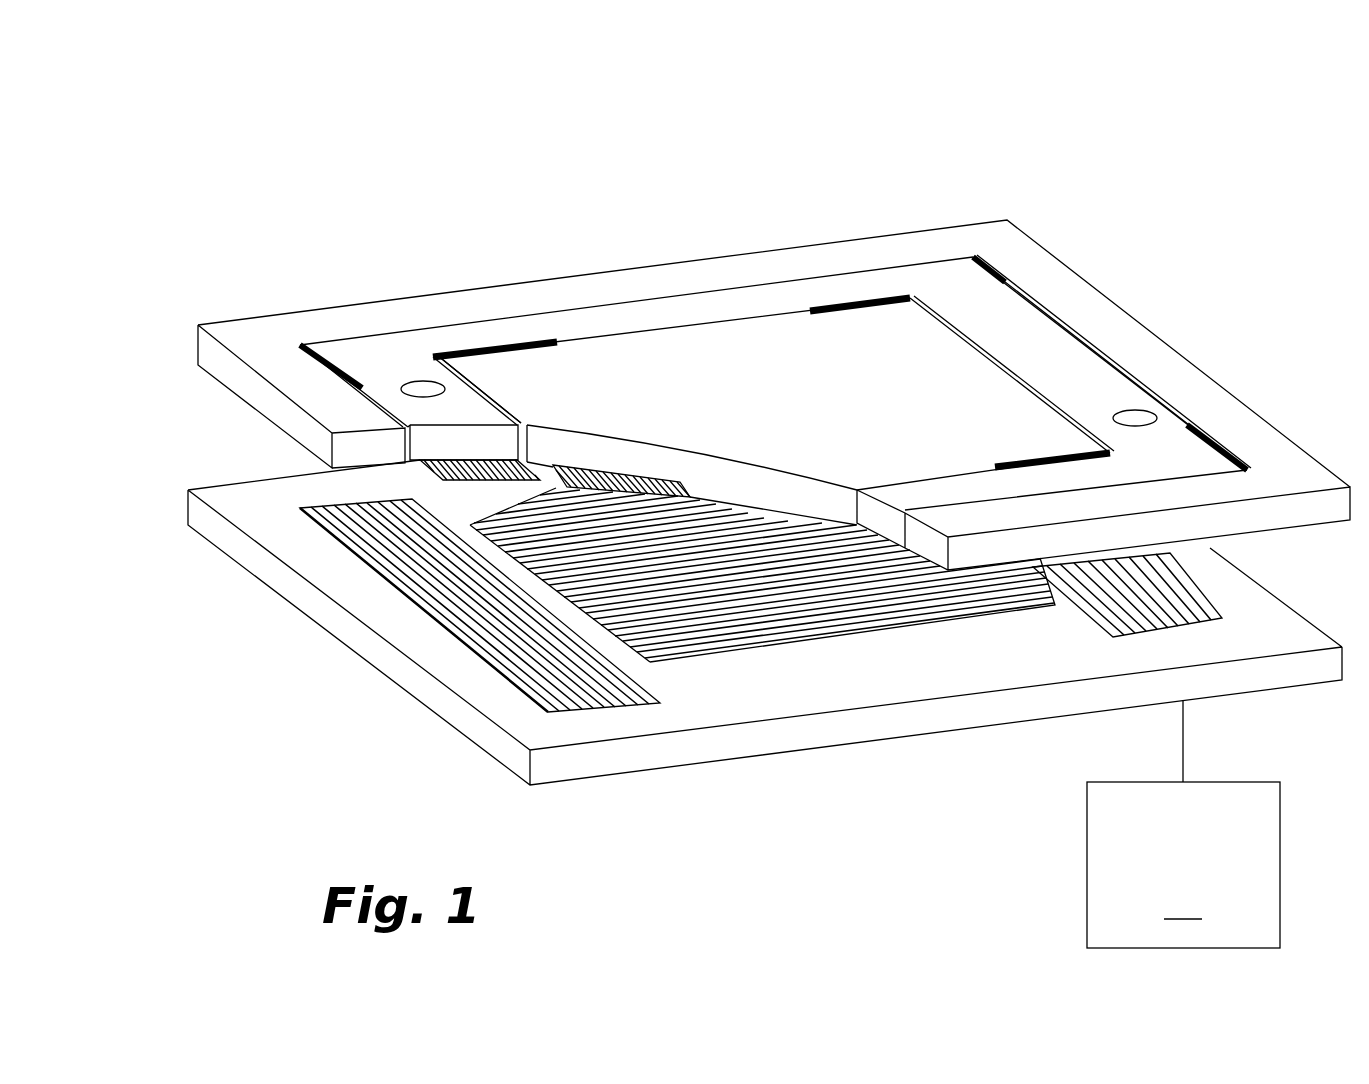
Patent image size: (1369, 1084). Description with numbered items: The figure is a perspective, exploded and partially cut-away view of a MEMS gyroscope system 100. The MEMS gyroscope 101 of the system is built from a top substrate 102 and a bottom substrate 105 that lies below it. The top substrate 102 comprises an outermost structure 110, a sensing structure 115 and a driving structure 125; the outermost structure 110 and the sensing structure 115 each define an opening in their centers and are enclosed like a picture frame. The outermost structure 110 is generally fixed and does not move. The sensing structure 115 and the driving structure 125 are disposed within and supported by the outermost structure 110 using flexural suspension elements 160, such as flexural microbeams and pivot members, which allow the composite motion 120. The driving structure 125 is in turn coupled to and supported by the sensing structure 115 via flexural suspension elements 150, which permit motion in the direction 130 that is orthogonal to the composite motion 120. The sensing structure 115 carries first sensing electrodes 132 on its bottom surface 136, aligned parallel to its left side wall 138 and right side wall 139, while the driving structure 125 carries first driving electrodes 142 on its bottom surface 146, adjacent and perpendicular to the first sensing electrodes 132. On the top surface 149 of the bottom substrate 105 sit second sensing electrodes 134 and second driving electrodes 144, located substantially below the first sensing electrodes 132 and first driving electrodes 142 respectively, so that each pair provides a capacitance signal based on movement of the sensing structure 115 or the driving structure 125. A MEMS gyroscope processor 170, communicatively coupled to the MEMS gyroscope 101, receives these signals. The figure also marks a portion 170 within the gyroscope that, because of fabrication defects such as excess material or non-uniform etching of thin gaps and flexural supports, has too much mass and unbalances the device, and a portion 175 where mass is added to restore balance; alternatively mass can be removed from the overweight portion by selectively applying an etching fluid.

The MEMS gyroscope system 100 is at (176, 152).
The MEMS gyroscope 101 is at (738, 226).
The top substrate 102 is at (1150, 318).
The bottom substrate 105 is at (463, 738).
The outermost structure 110 is at (1299, 481).
The sensing structure 115 is at (1074, 376).
The composite motion 120 is at (545, 327).
The driving structure 125 is at (777, 408).
The direction 130 is at (1006, 413).
The first sensing electrodes 132 is at (453, 482).
The second sensing electrodes 134 is at (445, 595).
The bottom surface 136 is at (414, 473).
The left side wall 138 is at (407, 362).
The right side wall 139 is at (1003, 330).
The first driving electrodes 142 is at (853, 600).
The second driving electrodes 144 is at (736, 633).
The bottom surface 146 is at (551, 471).
The top surface 149 is at (661, 714).
The flexural suspension elements 150 is at (503, 342).
The flexural suspension elements 160 is at (307, 338).
The MEMS gyroscope processor 170 is at (1137, 408).
The portion 175 is at (423, 382).